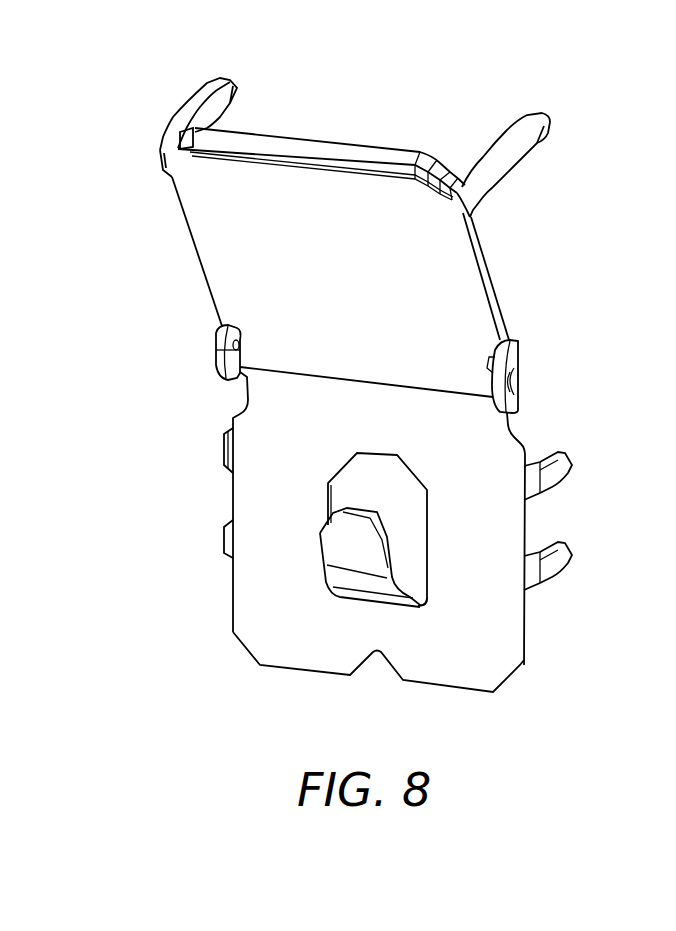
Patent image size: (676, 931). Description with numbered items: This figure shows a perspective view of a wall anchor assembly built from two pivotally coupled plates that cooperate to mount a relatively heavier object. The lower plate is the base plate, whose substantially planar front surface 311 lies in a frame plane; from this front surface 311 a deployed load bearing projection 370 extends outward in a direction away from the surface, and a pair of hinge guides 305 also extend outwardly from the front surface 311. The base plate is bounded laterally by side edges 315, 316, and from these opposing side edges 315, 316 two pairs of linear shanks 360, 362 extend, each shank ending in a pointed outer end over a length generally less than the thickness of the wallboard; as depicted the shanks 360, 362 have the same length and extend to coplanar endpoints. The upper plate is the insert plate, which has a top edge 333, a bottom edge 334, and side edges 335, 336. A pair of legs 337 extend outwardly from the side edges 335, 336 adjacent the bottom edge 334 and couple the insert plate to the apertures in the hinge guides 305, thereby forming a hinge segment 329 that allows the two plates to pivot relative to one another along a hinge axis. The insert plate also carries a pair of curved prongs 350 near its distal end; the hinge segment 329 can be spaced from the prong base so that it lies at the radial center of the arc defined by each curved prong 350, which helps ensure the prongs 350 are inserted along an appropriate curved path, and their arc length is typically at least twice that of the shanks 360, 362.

The curved prongs 350 is at (198, 90).
The top edge 333 is at (322, 148).
The side edge 336 is at (189, 228).
The side edge 335 is at (483, 243).
The bottom edge 334 is at (437, 383).
The legs 337 is at (240, 362).
The hinge guides 305 is at (512, 358).
The hinge segment 329 is at (506, 386).
The side edge 315 is at (525, 633).
The linear shanks 360 is at (557, 470).
The linear shanks 362 is at (557, 565).
The side edge 316 is at (345, 540).
The deployed load bearing projection 370 is at (233, 600).
The front surface 311 is at (443, 658).